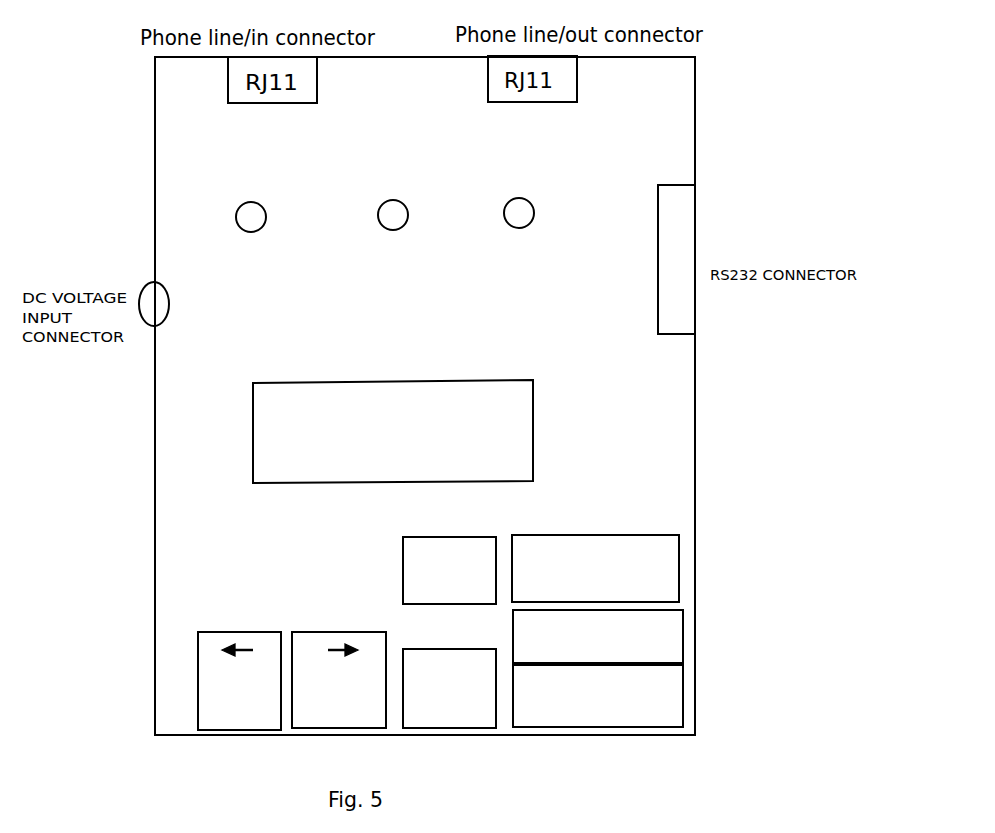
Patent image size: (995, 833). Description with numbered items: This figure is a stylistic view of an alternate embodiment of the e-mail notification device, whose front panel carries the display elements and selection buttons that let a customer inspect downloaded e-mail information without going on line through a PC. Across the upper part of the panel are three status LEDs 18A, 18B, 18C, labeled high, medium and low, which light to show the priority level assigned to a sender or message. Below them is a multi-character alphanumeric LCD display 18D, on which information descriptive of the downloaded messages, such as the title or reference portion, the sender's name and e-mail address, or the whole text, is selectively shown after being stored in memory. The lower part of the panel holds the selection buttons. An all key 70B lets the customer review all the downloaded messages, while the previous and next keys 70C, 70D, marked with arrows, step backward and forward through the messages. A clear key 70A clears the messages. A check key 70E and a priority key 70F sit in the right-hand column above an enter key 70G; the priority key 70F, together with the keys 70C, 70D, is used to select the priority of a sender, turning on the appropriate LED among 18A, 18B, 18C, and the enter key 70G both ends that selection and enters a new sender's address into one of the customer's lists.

The status LED 18A is at (249, 219).
The status LED 18B is at (393, 219).
The status LED 18C is at (522, 217).
The LCD display 18D is at (393, 431).
The clear key 70A is at (449, 688).
The all key 70B is at (449, 570).
The previous key 70C is at (243, 657).
The next key 70D is at (339, 656).
The check key 70E is at (595, 568).
The priority key 70F is at (598, 636).
The enter key 70G is at (598, 696).